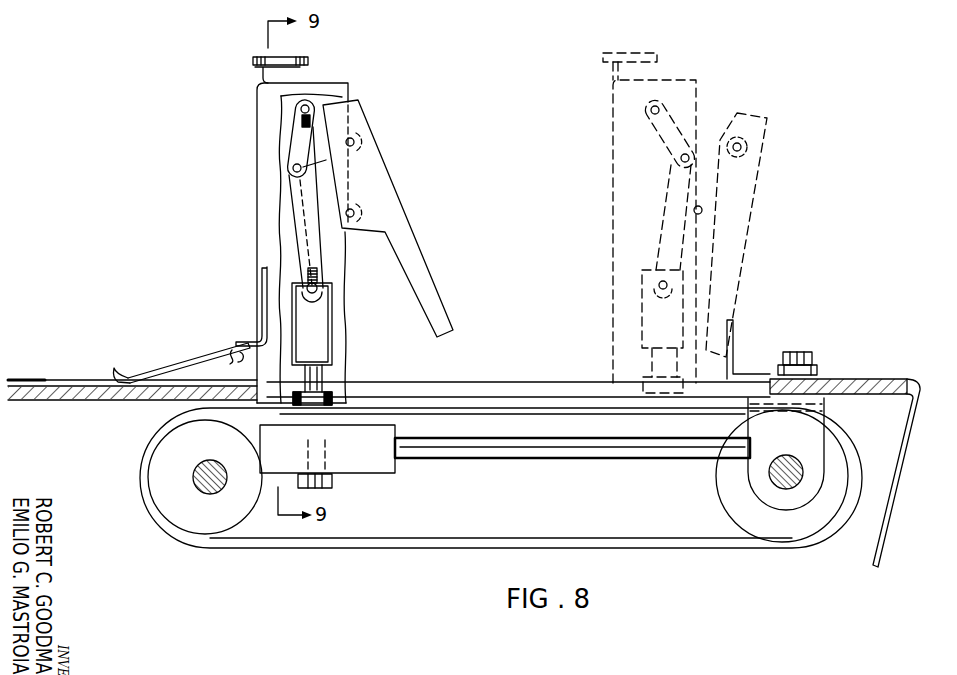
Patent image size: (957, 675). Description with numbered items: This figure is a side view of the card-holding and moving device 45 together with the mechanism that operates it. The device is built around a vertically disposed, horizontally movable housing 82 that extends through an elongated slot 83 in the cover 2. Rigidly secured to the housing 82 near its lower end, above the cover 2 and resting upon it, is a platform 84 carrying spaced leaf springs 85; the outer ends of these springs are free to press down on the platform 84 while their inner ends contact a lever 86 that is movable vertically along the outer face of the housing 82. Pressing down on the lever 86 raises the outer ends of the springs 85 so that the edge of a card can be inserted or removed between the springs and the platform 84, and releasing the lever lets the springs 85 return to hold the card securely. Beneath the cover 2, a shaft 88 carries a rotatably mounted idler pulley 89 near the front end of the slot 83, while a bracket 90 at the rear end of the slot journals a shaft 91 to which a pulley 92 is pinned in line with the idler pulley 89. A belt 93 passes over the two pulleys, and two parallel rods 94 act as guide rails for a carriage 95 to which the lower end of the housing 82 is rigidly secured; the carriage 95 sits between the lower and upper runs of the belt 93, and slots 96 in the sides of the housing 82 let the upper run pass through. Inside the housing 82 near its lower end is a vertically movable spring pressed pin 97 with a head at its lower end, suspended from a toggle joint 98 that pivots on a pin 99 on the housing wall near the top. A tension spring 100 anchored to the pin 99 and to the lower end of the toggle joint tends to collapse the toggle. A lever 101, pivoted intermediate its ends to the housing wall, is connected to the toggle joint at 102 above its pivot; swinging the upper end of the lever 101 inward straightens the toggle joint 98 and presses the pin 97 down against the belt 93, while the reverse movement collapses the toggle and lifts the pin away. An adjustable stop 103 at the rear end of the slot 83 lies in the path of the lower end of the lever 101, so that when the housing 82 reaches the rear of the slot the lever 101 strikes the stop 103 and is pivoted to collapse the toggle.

The cover 2 is at (858, 382).
The card-holding and moving device 45 is at (340, 101).
The housing 82 is at (257, 178).
The elongated slot 83 is at (438, 384).
The platform 84 is at (183, 380).
The leaf springs 85 is at (133, 373).
The lever 86 is at (309, 62).
The shaft 88 is at (193, 477).
The idler pulley 89 is at (212, 506).
The bracket 90 is at (806, 437).
The shaft 91 is at (780, 492).
The pulley 92 is at (829, 512).
The belt 93 is at (549, 410).
The rods 94 is at (562, 461).
The carriage 95 is at (344, 462).
The slots 96 is at (353, 398).
The spring pressed pin 97 is at (323, 375).
The toggle joint 98 is at (289, 138).
The pin 99 is at (292, 105).
The tension spring 100 is at (312, 121).
The lever 101 is at (385, 193).
The connection 102 is at (357, 144).
The stop 103 is at (735, 350).